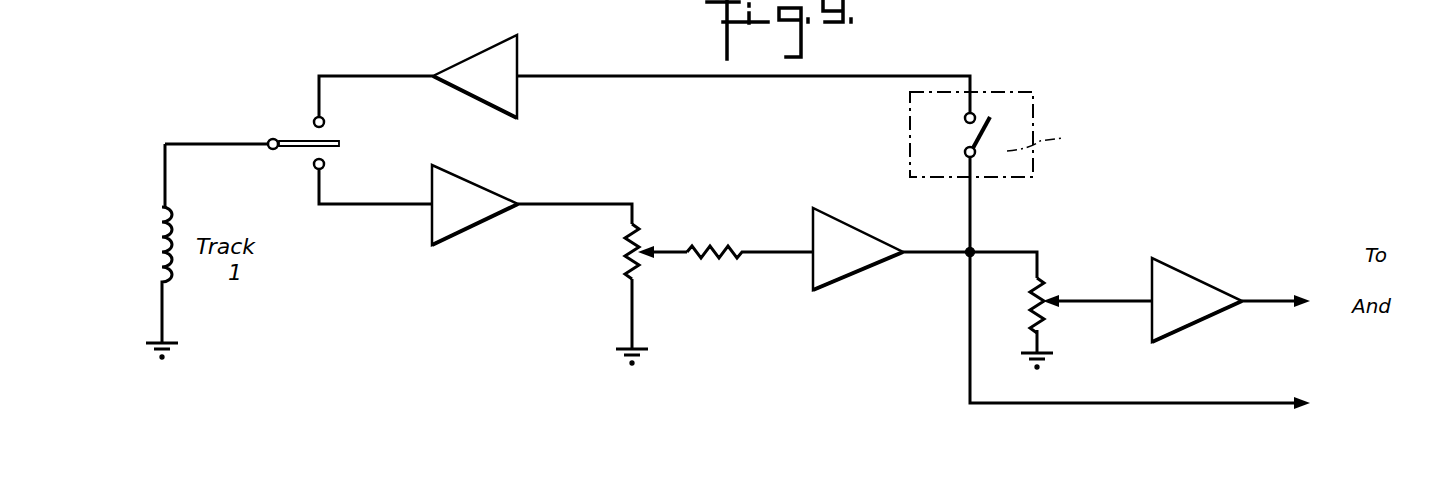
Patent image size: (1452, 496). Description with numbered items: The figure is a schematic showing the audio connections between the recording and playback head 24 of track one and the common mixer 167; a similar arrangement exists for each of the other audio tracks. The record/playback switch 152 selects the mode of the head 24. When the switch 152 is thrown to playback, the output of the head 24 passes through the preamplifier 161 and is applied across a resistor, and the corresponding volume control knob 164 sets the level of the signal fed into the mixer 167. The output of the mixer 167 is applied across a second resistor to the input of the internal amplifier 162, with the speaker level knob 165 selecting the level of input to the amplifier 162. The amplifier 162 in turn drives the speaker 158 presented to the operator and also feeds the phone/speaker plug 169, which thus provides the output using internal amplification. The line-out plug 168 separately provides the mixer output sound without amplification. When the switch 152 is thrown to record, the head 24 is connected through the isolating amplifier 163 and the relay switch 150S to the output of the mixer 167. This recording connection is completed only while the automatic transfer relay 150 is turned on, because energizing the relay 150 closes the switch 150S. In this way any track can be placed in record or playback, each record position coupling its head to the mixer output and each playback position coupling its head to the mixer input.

The recording and playback head 24 is at (152, 238).
The record/playback switch 152 is at (293, 139).
The isolating amplifier 163 is at (510, 105).
The preamplifier 161 is at (450, 230).
The audio volume control knob 164 is at (668, 262).
The mixer 167 is at (818, 293).
The transfer relay 150 is at (1031, 151).
The relay switch 150S is at (976, 128).
The speaker level knob 165 is at (1086, 299).
The internal amplifier 162 is at (1195, 285).
The speaker 158 is at (1372, 283).
The phone/speaker plug 169 is at (1362, 330).
The line-out plug 168 is at (1373, 406).